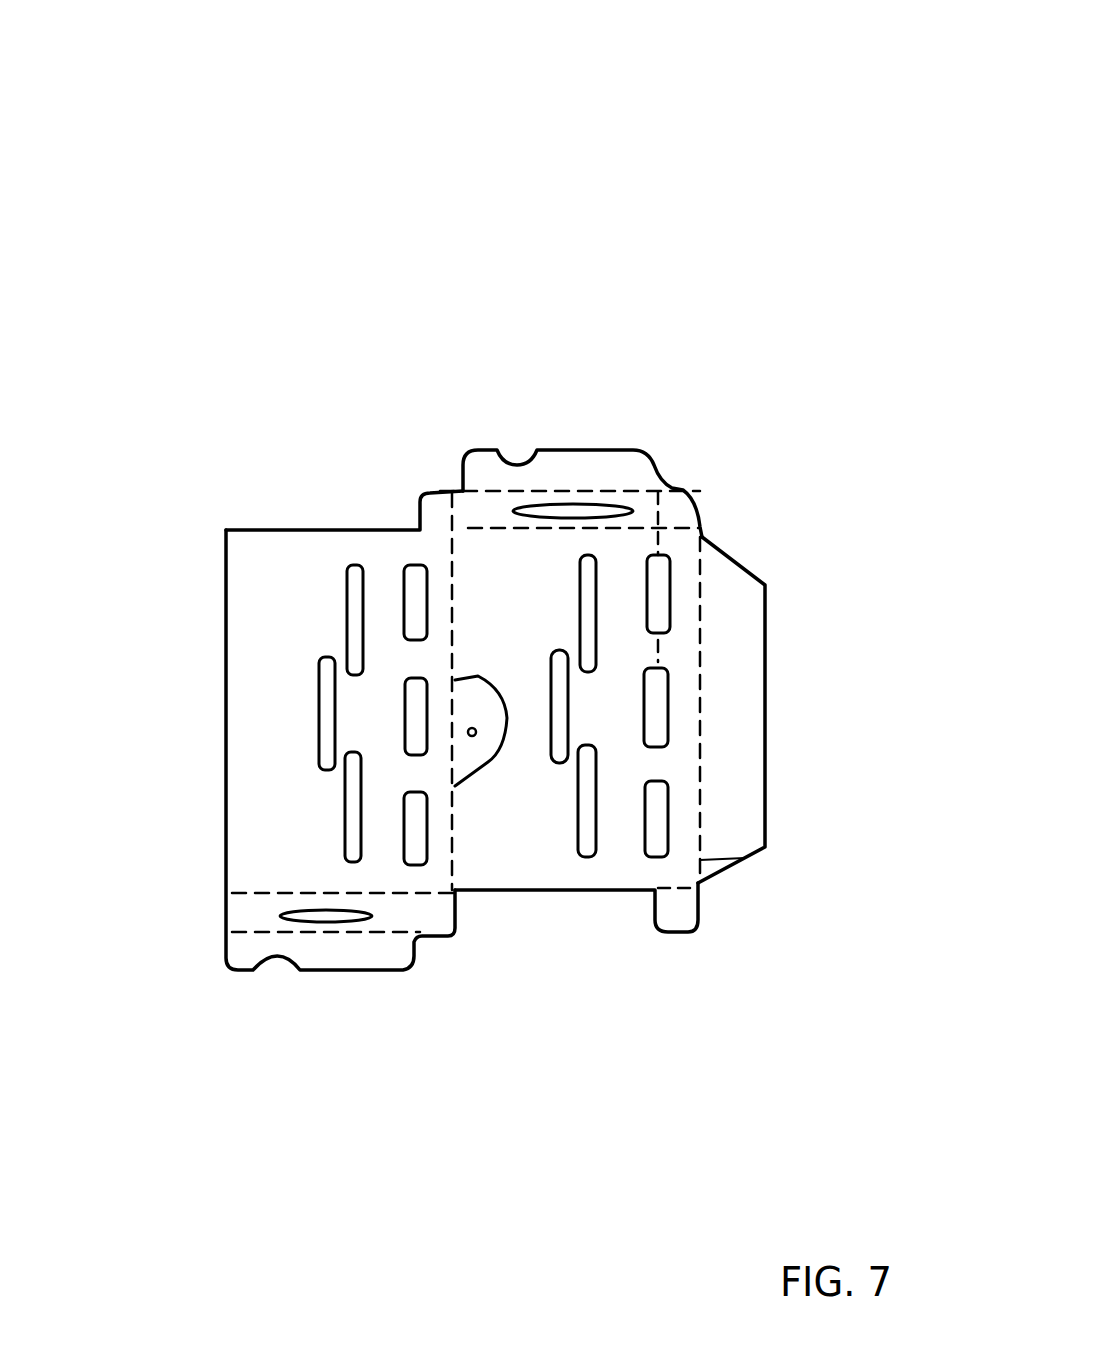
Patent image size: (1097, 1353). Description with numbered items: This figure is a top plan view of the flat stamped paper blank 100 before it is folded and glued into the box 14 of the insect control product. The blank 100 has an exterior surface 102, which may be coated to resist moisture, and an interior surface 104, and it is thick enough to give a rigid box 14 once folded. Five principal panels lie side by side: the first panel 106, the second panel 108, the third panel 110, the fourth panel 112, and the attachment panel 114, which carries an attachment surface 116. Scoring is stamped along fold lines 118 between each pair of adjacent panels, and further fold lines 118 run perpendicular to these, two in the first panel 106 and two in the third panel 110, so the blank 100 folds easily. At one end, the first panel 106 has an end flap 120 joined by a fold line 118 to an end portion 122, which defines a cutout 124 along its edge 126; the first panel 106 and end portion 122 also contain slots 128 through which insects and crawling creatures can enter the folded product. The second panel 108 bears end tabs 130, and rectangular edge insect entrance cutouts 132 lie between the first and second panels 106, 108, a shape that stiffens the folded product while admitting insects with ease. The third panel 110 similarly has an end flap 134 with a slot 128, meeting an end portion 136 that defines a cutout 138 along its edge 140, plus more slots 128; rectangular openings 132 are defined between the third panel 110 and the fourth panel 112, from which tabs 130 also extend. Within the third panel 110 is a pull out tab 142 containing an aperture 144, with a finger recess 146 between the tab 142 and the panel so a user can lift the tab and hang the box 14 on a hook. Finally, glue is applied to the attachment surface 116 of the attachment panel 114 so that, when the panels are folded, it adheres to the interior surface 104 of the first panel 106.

The box 14 is at (566, 146).
The blank 100 is at (737, 573).
The exterior surface 102 is at (250, 550).
The interior surface 104 is at (290, 506).
The first panel 106 is at (245, 630).
The second panel 108 is at (420, 520).
The third panel 110 is at (538, 890).
The fourth panel 112 is at (705, 537).
The attachment panel 114 is at (748, 625).
The attachment surface 116 is at (750, 683).
The fold lines 118 is at (683, 490).
The end flap 120 is at (222, 917).
The end portion 122 is at (336, 950).
The cutout 124 is at (272, 984).
The edge 126 is at (280, 973).
The slots 128 is at (573, 505).
The end tabs 130 is at (430, 520).
The edge insect entrance cutouts 132 is at (403, 790).
The end flap 134 is at (552, 455).
The end portion 136 is at (618, 490).
The cutout 138 is at (513, 450).
The edge 140 is at (497, 447).
The pull out tab 142 is at (472, 680).
The aperture 144 is at (471, 742).
The finger recess 146 is at (487, 742).